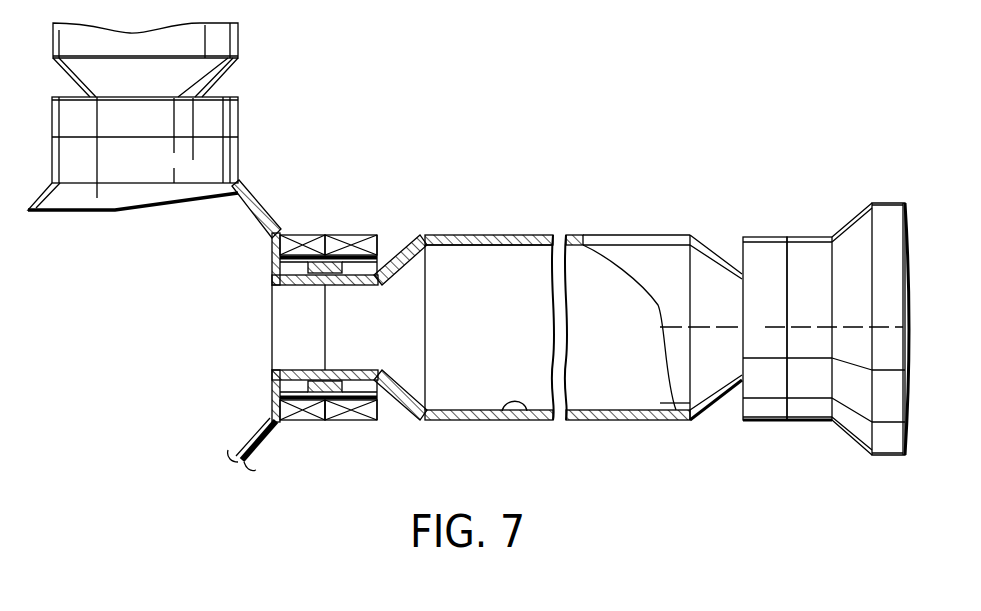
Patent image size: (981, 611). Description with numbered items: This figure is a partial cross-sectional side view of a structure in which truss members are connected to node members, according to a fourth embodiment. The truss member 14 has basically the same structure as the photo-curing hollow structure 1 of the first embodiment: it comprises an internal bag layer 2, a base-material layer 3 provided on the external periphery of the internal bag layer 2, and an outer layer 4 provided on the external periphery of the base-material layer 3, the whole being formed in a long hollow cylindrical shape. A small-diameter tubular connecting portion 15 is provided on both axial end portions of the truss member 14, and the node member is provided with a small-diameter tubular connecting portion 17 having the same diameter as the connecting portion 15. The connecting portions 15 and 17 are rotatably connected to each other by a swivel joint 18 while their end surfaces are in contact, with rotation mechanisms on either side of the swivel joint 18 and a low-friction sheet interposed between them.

The photo-curing hollow structure 1 is at (600, 425).
The internal bag layer 2 is at (536, 417).
The base-material layer 3 is at (490, 422).
The outer layer 4 is at (455, 422).
The truss member 14 is at (524, 220).
The connecting portion 15 is at (375, 260).
The connecting portion 17 is at (280, 262).
The swivel joint 18 is at (282, 388).